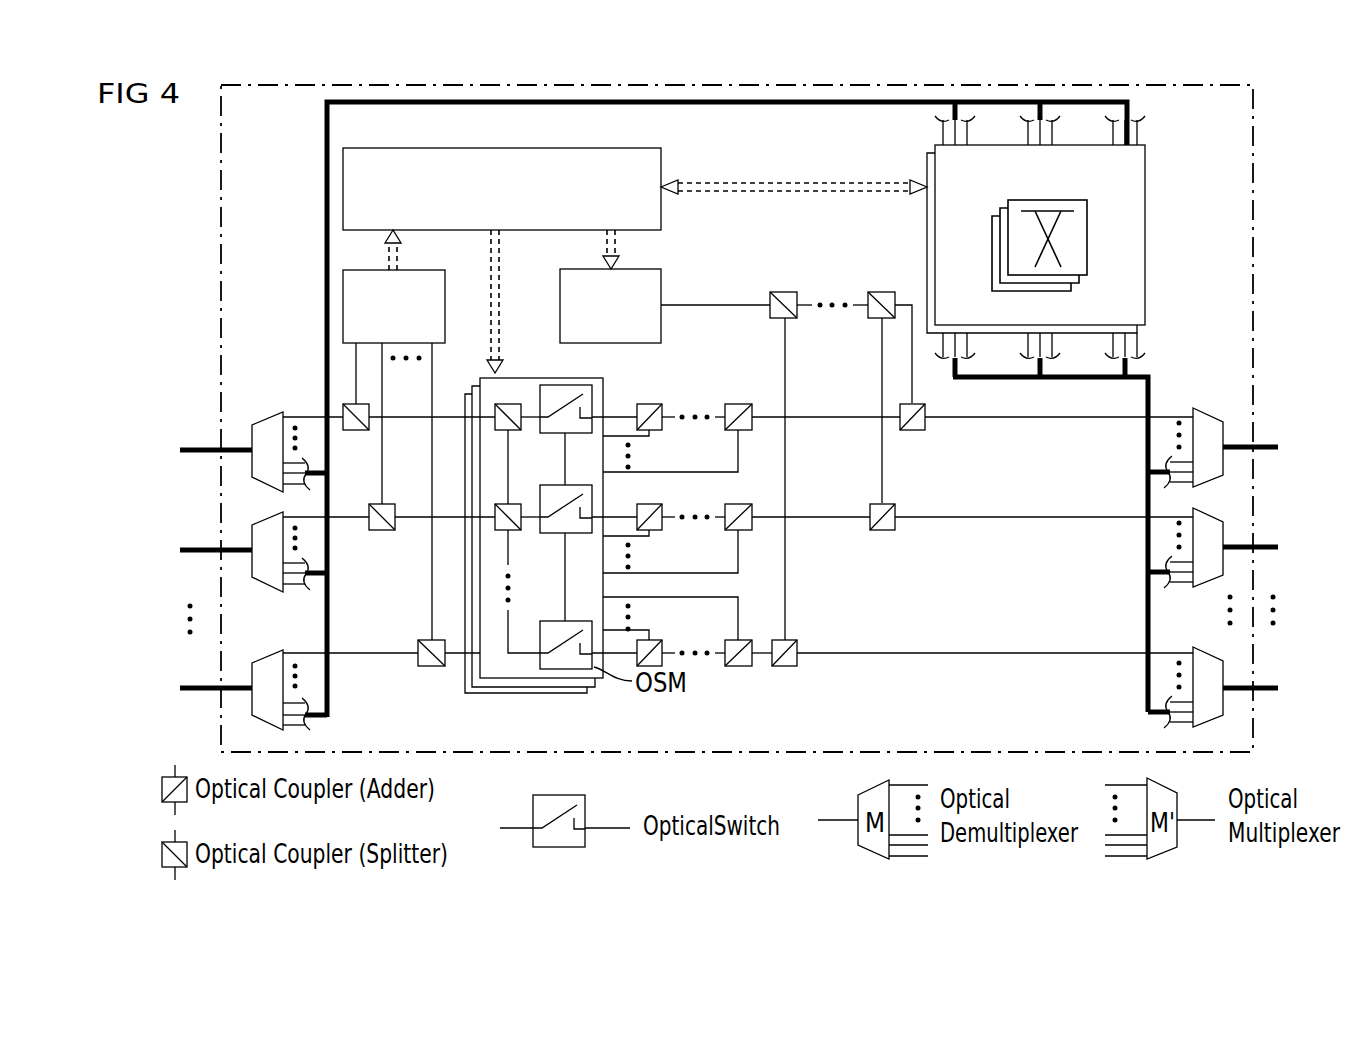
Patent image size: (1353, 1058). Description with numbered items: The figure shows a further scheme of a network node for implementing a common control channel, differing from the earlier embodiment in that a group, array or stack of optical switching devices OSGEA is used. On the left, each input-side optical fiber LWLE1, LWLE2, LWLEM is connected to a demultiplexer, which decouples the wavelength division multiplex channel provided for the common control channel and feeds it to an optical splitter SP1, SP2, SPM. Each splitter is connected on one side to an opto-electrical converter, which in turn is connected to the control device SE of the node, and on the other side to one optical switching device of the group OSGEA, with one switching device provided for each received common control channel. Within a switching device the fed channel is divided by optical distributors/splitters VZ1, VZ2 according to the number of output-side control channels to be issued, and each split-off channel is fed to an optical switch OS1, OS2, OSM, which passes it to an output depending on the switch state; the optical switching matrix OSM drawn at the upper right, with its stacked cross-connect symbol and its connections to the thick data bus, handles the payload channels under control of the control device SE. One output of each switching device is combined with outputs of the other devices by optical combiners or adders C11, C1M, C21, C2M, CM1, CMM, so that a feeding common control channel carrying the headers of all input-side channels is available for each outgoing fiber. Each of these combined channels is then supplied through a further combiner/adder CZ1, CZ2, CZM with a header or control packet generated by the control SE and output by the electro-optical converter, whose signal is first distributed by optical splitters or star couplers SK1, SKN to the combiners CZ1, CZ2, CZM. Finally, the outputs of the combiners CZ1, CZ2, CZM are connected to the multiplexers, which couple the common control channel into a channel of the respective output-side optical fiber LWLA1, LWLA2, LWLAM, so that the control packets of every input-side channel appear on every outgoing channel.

The control device SE is at (502, 189).
The optical switch OSM is at (1036, 237).
The optical splitter or star coupler SK1 is at (784, 292).
The optical splitter or star coupler SKN is at (881, 292).
The optical splitter SP1 is at (358, 431).
The optical splitter SP2 is at (384, 531).
The optical splitter SPM is at (418, 666).
The group of optical switching devices OSGEA is at (500, 694).
The optical distributor/splitter VZ1 is at (514, 431).
The optical distributor/splitter VZ2 is at (514, 531).
The optical switch OS1 is at (594, 393).
The optical switch OS2 is at (594, 493).
The optical combiner/adder C11 is at (652, 431).
The optical combiner/adder C1M is at (738, 403).
The optical combiner/adder C21 is at (652, 531).
The optical combiner/adder C2M is at (752, 506).
The optical combiner/adder CM1 is at (655, 639).
The optical combiner/adder CMM is at (738, 667).
The optical combiner CZ1 is at (912, 431).
The optical combiner CZ2 is at (882, 531).
The optical combiner CZM is at (788, 667).
The input-side optical fiber LWLE1 is at (227, 452).
The input-side optical fiber LWLE2 is at (227, 552).
The input-side optical fiber LWLEM is at (224, 689).
The output-side optical fiber LWLA1 is at (1252, 448).
The output-side optical fiber LWLA2 is at (1252, 548).
The output-side optical fiber LWLAM is at (1254, 687).